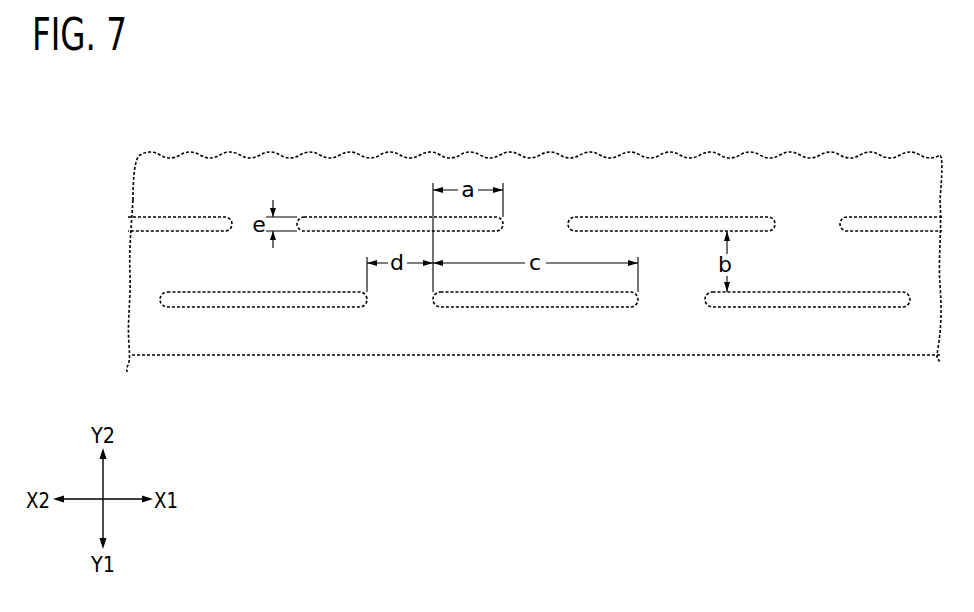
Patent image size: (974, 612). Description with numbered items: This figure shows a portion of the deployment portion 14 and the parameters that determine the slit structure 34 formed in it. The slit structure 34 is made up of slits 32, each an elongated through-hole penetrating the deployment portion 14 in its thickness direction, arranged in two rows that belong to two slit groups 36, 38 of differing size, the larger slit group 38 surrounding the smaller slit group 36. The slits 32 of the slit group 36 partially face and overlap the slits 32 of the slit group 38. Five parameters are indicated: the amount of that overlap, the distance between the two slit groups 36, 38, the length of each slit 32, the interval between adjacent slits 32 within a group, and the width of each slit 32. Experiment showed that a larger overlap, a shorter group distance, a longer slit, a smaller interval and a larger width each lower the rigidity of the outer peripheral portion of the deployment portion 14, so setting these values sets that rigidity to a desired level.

The deployment portion 14 is at (170, 336).
The slit 32 is at (659, 224).
The slit structure 34 is at (331, 332).
The slit group 36 is at (319, 242).
The slit group 38 is at (345, 406).